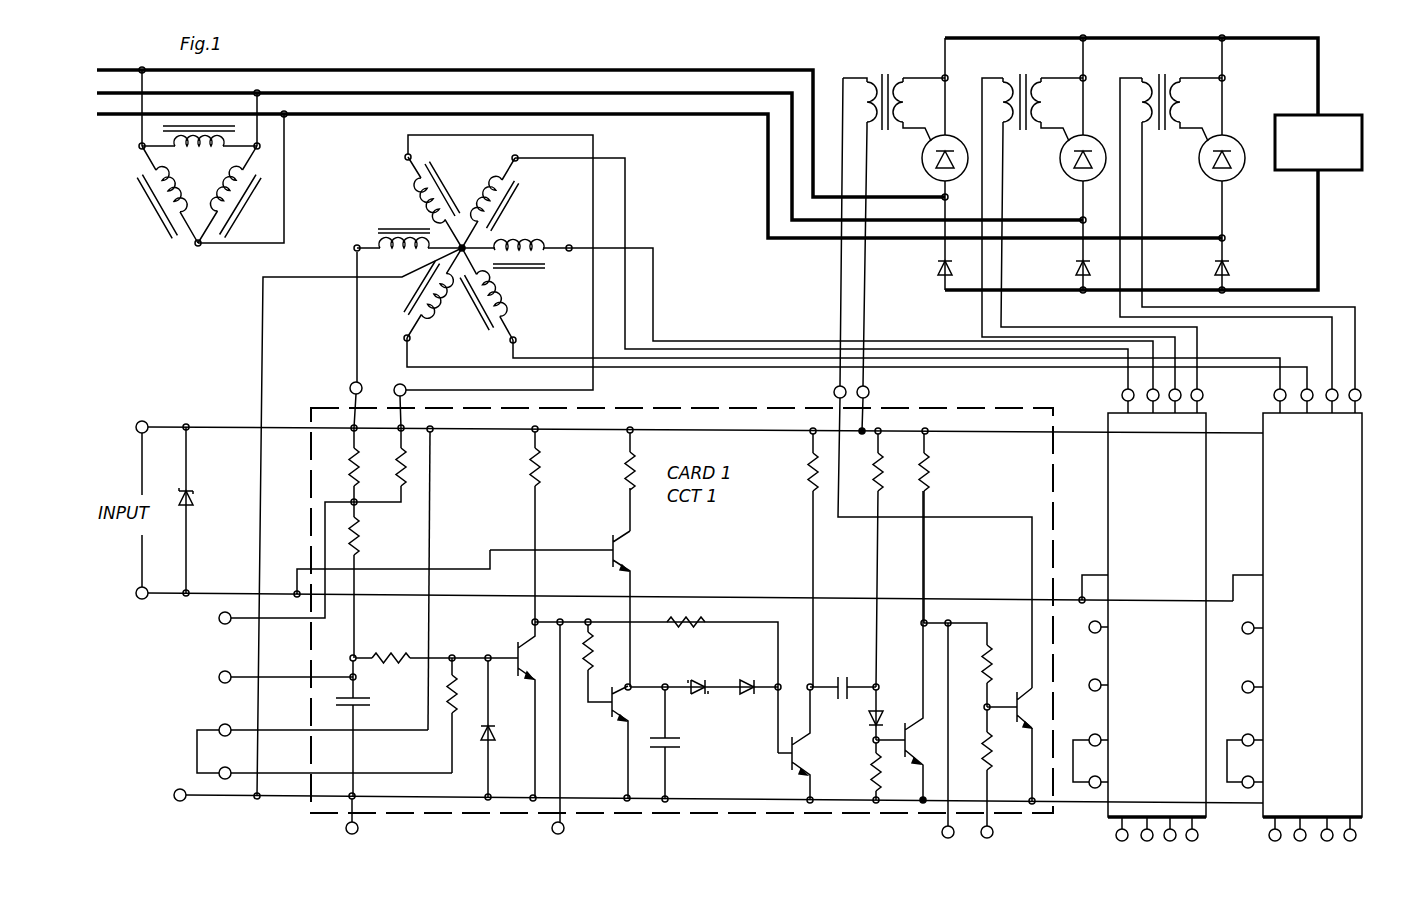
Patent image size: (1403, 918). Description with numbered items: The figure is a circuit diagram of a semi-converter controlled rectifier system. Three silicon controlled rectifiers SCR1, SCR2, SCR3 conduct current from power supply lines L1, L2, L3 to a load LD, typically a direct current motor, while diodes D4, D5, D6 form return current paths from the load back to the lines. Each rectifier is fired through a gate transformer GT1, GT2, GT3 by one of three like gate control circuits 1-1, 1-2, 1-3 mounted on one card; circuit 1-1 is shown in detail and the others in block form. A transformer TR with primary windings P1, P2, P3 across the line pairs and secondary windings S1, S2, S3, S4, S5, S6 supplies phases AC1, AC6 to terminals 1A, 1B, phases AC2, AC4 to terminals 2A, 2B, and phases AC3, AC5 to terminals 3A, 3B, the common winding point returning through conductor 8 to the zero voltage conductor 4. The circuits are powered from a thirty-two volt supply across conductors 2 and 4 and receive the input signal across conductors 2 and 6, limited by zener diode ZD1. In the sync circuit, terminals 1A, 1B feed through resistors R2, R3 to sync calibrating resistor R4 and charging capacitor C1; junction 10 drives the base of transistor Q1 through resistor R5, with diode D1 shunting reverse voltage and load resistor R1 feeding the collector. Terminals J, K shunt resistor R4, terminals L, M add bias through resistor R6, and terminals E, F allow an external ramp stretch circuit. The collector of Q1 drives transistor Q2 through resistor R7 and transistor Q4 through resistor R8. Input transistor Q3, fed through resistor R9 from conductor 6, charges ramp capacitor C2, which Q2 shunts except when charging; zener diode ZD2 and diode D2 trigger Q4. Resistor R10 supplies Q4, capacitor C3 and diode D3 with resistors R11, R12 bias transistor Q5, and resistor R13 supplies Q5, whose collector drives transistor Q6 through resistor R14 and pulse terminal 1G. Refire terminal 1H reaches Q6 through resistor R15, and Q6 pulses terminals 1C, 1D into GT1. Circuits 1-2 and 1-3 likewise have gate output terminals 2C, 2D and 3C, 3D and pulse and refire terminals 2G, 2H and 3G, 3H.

The power supply line L1 is at (501, 130).
The power supply line L2 is at (570, 152).
The power supply line L3 is at (640, 172).
The transformer TR is at (348, 197).
The primary winding P1 is at (218, 157).
The primary winding P2 is at (240, 212).
The primary winding P3 is at (148, 205).
The secondary winding S1 is at (392, 252).
The secondary winding S2 is at (482, 195).
The secondary winding S3 is at (500, 295).
The secondary winding S4 is at (522, 238).
The secondary winding S5 is at (445, 298).
The secondary winding S6 is at (420, 198).
The phase AC1 is at (353, 248).
The phase AC2 is at (510, 157).
The phase AC3 is at (519, 341).
The phase AC4 is at (569, 244).
The phase AC5 is at (404, 338).
The phase AC6 is at (404, 158).
The gate transformer GT1 is at (893, 68).
The gate transformer GT2 is at (1026, 68).
The gate transformer GT3 is at (1166, 68).
The silicon controlled rectifier SCR1 is at (924, 182).
The silicon controlled rectifier SCR2 is at (1062, 182).
The silicon controlled rectifier SCR3 is at (1200, 184).
The diode D1 is at (496, 733).
The unidirectional diode D2 is at (746, 684).
The diode D3 is at (880, 712).
The diode D4 is at (936, 268).
The diode D5 is at (1073, 268).
The diode D6 is at (1213, 268).
The load LD is at (1297, 113).
The AC terminal 1A is at (349, 388).
The AC terminal 1B is at (406, 389).
The gate pulse terminal 1C is at (834, 392).
The gate pulse terminal 1D is at (869, 392).
The pulse terminal 1G is at (940, 833).
The refire terminal 1H is at (993, 832).
The AC signal terminal 2A is at (1122, 395).
The AC signal terminal 2B is at (1153, 401).
The gate pulse output terminal 2C is at (1175, 401).
The gate pulse output terminal 2D is at (1203, 395).
The AC signal terminal 3A is at (1274, 394).
The AC signal terminal 3B is at (1307, 401).
The gate pulse output terminal 3C is at (1332, 401).
The gate pulse output terminal 3D is at (1360, 394).
The gate control circuit 1-1 is at (727, 405).
The gate control circuit 1-2 is at (1157, 615).
The gate control circuit 1-3 is at (1312, 615).
The conductor 2 is at (228, 426).
The conductor 4 is at (175, 790).
The conductor 6 is at (166, 590).
The conductor 8 is at (262, 332).
The junction 10 is at (350, 658).
The load resistor R1 is at (528, 466).
The resistor R2 is at (348, 472).
The resistor R3 is at (392, 470).
The sync calibrating resistor R4 is at (362, 530).
The current limiting resistor R5 is at (392, 655).
The current limiting resistor R6 is at (450, 720).
The current limiting resistor R7 is at (592, 665).
The current limiting resistor R8 is at (683, 635).
The resistor R9 is at (622, 472).
The current limiting resistor R10 is at (805, 473).
The current limiting resistor R11 is at (870, 478).
The current by-pass resistor R12 is at (868, 768).
The resistor R13 is at (932, 482).
The current limiting resistor R14 is at (996, 660).
The current limiting resistor R15 is at (995, 748).
The charging capacitor C1 is at (372, 700).
The charging capacitor C2 is at (683, 745).
The pulse forming capacitor C3 is at (862, 675).
The zener diode ZD1 is at (194, 500).
The zener diode ZD2 is at (703, 685).
The N-P-N transistor Q1 is at (528, 660).
The N-P-N transistor Q2 is at (619, 706).
The P-N-P transistor Q3 is at (627, 551).
The gate pulse control N-P-N transistor Q4 is at (798, 753).
The N-P-N transistor Q5 is at (912, 740).
The N-P-N transistor Q6 is at (1020, 707).
The external terminal K is at (219, 618).
The external terminal J is at (219, 676).
The external terminal M is at (218, 728).
The external terminal L is at (223, 767).
The external terminal E is at (359, 830).
The external terminal F is at (552, 829).
The pulse terminal 2G is at (1170, 842).
The refire terminal 2H is at (1192, 842).
The pulse terminal 3G is at (1327, 842).
The refire terminal 3H is at (1350, 842).